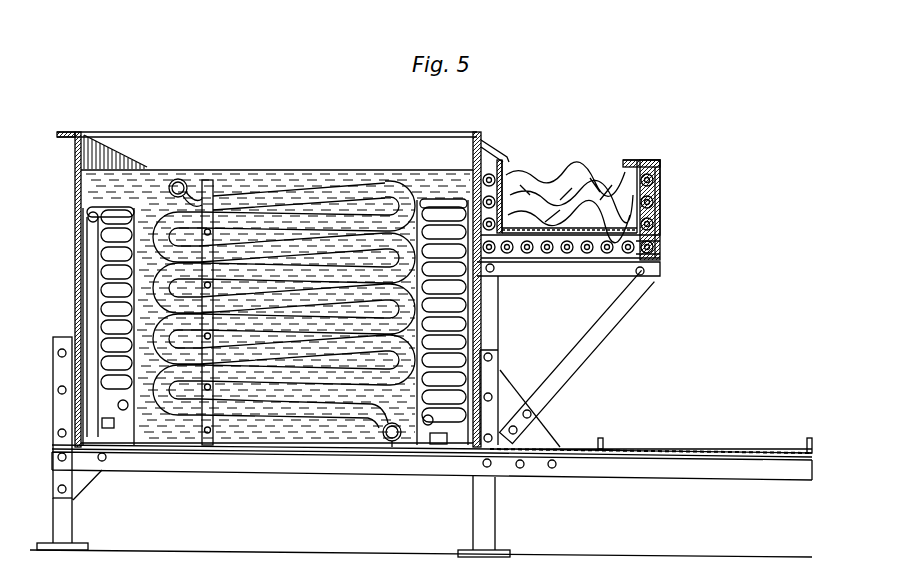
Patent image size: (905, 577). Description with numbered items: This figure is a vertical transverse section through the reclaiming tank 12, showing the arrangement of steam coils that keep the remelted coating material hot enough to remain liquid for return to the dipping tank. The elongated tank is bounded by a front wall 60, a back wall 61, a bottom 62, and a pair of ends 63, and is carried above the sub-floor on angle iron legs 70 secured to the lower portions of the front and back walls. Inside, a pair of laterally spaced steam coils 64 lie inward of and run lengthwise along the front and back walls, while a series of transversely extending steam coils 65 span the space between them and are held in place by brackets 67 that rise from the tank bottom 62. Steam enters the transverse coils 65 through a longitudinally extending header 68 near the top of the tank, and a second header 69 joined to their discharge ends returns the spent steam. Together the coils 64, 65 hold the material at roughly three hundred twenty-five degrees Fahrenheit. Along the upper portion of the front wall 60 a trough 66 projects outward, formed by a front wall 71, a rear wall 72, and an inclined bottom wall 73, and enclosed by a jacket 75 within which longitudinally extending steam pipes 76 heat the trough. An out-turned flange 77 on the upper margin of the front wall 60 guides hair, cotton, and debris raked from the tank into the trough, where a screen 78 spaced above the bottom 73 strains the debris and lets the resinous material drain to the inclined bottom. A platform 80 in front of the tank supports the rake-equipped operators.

The reclaiming tank 12 is at (298, 111).
The front wall 60 is at (478, 308).
The back wall 61 is at (78, 205).
The bottom 62 is at (293, 449).
The ends 63 is at (393, 152).
The laterally spaced steam coils 64 is at (112, 293).
The transversely extending steam coils 65 is at (314, 404).
The trough 66 is at (662, 196).
The brackets 67 is at (210, 192).
The header 68 is at (179, 179).
The header 69 is at (394, 448).
The angle iron legs 70 is at (488, 519).
The front wall of trough 71 is at (647, 172).
The rear wall of trough 72 is at (510, 164).
The bottom wall of trough 73 is at (577, 260).
The jacket 75 is at (660, 226).
The steam pipes 76 is at (660, 243).
The out-turned flange 77 is at (500, 152).
The screen 78 is at (587, 223).
The platform 80 is at (690, 452).